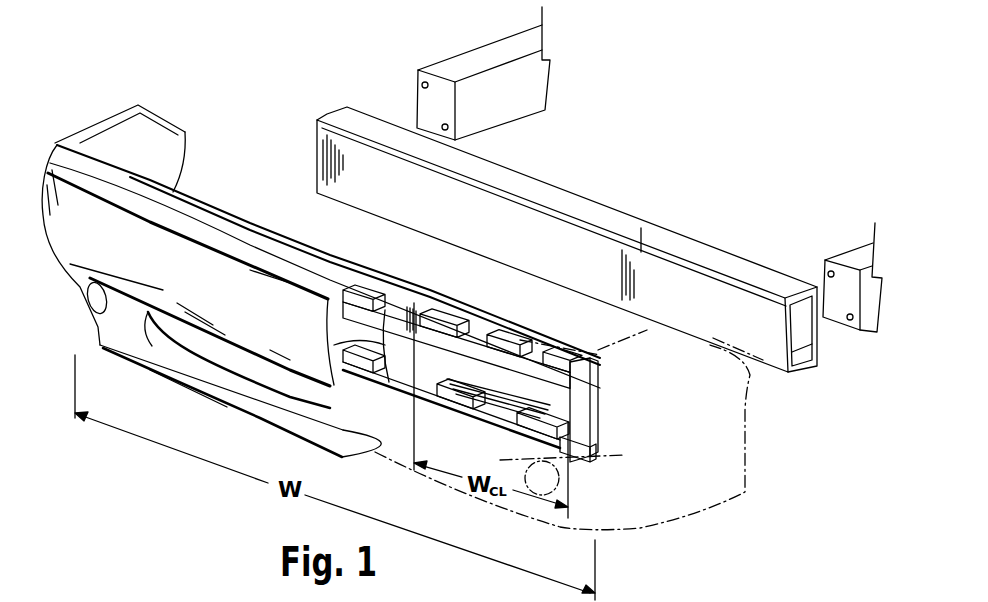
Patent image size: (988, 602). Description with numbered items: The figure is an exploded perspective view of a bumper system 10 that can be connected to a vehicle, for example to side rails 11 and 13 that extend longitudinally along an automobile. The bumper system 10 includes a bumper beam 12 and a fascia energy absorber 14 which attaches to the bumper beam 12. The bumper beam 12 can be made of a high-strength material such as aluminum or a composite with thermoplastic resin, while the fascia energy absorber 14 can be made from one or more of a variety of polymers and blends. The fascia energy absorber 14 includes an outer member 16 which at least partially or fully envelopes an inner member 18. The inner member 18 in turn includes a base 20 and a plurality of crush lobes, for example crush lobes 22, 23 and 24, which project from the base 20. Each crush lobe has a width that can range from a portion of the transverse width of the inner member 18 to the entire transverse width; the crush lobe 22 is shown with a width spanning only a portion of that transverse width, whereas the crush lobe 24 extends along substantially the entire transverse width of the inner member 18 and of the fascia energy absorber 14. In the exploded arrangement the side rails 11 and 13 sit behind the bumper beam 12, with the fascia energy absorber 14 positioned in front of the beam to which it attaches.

The bumper system 10 is at (116, 66).
The side rail 11 is at (472, 65).
The bumper beam 12 is at (554, 163).
The side rail 13 is at (858, 255).
The fascia energy absorber 14 is at (268, 206).
The outer member 16 is at (320, 287).
The inner member 18 is at (413, 303).
The base 20 is at (580, 427).
The crush lobe 22 is at (482, 370).
The crush lobe 23 is at (363, 330).
The crush lobe 24 is at (447, 413).